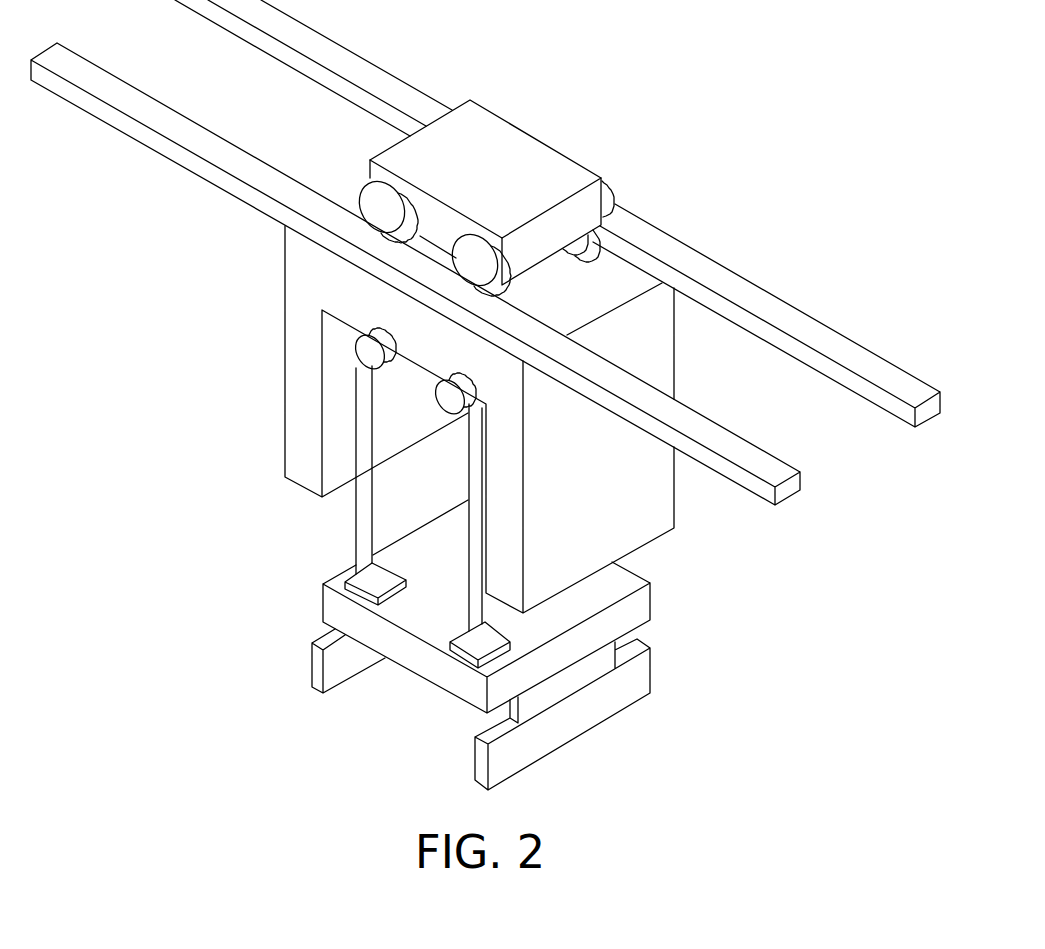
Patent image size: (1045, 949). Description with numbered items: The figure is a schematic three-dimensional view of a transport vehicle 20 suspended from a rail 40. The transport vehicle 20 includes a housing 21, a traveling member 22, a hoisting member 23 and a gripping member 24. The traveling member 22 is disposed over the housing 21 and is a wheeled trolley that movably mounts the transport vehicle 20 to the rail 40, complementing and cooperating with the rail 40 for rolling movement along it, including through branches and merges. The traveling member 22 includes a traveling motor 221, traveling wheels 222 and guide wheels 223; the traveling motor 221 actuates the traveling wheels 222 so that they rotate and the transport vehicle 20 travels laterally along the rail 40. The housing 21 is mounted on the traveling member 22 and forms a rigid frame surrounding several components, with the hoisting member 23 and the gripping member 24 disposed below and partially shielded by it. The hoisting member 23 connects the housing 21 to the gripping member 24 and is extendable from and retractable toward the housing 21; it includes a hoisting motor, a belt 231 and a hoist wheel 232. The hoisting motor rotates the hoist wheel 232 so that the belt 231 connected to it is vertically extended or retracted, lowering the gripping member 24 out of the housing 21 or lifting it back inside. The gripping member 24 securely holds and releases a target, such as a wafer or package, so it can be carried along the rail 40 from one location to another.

The transport vehicle 20 is at (485, 252).
The housing 21 is at (638, 535).
The traveling member 22 is at (460, 172).
The traveling motor 221 is at (489, 122).
The traveling wheel 222 is at (375, 212).
The guide wheel 223 is at (583, 247).
The hoisting member 23 is at (347, 479).
The belt 231 is at (362, 513).
The hoist wheel 232 is at (373, 360).
The gripping member 24 is at (437, 645).
The rail 40 is at (492, 263).